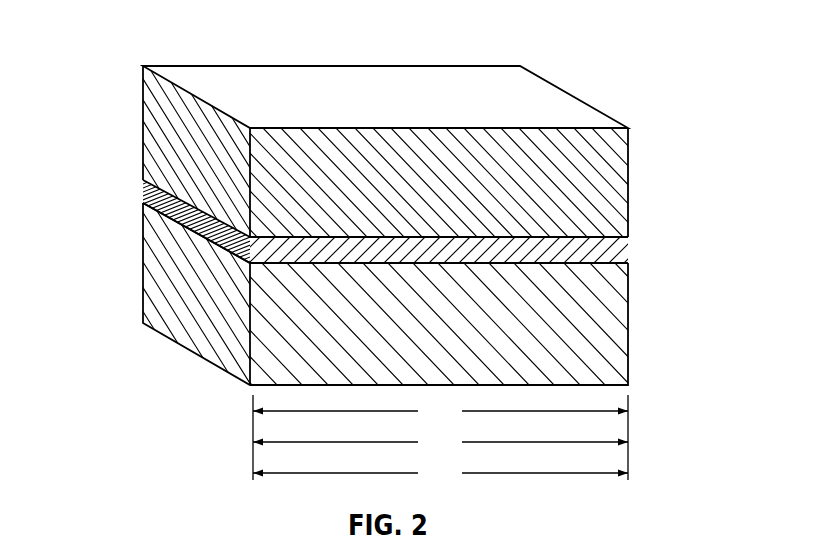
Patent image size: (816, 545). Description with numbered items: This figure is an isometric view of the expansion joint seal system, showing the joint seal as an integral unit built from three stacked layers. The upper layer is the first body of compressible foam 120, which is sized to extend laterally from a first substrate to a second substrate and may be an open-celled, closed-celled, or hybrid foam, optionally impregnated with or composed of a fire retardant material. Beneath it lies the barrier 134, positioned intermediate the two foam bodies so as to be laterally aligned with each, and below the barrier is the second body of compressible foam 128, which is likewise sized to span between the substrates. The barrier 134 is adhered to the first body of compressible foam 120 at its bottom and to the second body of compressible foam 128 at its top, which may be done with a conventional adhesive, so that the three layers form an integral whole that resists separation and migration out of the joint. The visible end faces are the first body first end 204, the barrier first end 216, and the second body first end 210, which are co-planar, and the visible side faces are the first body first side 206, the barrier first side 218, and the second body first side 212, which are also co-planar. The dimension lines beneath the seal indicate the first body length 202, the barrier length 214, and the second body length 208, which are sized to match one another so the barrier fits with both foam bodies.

The first body of compressible foam 120 is at (163, 114).
The second body of compressible foam 128 is at (164, 290).
The barrier 134 is at (146, 190).
The barrier first end 216 is at (146, 197).
The barrier first side 218 is at (613, 251).
The first body first end 204 is at (240, 172).
The first body first side 206 is at (592, 193).
The second body first end 210 is at (240, 329).
The second body first side 212 is at (592, 335).
The first body length 202 is at (440, 437).
The barrier length 214 is at (440, 442).
The second body length 208 is at (440, 473).